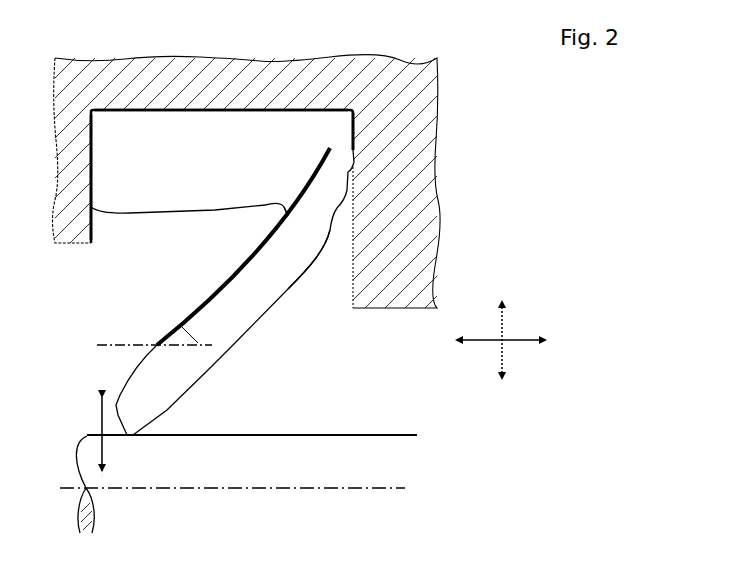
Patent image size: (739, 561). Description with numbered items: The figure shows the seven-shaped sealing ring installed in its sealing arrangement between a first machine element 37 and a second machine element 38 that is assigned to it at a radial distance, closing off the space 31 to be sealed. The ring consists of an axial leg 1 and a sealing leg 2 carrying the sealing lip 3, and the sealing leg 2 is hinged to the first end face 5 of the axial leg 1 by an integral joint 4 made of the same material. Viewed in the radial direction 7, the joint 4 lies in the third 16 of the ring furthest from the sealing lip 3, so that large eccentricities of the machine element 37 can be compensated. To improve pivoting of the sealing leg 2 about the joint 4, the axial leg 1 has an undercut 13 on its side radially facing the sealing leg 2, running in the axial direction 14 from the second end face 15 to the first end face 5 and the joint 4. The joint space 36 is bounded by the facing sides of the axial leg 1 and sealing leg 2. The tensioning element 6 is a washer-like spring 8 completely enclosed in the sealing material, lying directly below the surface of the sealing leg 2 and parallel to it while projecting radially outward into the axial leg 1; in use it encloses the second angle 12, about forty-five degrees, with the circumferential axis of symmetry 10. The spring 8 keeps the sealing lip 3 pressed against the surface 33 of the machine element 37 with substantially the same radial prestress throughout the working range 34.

The axial leg 1 is at (180, 158).
The sealing leg 2 is at (267, 280).
The sealing lip 3 is at (136, 418).
The joint 4 is at (317, 212).
The first end face 5 is at (353, 148).
The tensioning element 6 is at (221, 246).
The spring 8 is at (213, 296).
The circumferential axis of symmetry 10 is at (354, 487).
The second angle 12 is at (193, 332).
The undercut 13 is at (215, 211).
The axial direction 14 is at (501, 349).
The second end face 15 is at (92, 158).
The third of the sealing ring 16 is at (299, 176).
The space to be sealed 31 is at (125, 267).
The surface to be sealed 33 is at (296, 435).
The working range 34 is at (87, 431).
The joint space 36 is at (221, 246).
The first machine element 37 is at (342, 460).
The second machine element 38 is at (71, 90).
The radial direction 7 is at (494, 337).